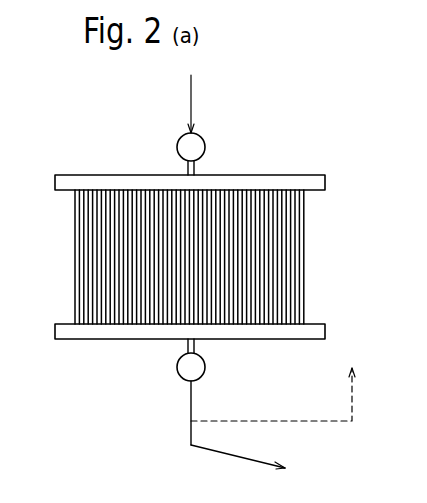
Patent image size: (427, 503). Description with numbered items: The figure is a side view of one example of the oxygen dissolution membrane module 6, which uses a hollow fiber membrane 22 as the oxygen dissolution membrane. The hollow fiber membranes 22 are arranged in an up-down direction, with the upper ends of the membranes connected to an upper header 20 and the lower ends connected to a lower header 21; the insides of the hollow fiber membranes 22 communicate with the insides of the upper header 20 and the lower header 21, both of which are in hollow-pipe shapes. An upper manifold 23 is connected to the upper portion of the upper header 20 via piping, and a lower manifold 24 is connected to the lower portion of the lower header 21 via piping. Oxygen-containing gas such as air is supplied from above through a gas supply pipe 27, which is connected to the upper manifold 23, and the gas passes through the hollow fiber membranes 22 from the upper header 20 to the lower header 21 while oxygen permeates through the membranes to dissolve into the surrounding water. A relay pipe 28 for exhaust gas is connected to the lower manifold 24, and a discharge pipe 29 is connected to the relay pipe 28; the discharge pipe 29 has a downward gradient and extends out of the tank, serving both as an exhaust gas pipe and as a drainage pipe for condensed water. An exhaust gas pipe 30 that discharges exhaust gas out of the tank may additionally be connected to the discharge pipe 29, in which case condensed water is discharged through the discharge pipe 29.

The oxygen dissolution membrane module 6 is at (258, 157).
The upper header 20 is at (115, 175).
The lower header 21 is at (86, 341).
The hollow fiber membrane 22 is at (82, 240).
The upper manifold 23 is at (205, 147).
The lower manifold 24 is at (205, 368).
The gas supply pipe 27 is at (190, 110).
The relay pipe 28 is at (190, 412).
The discharge pipe 29 is at (226, 457).
The exhaust gas pipe 30 is at (355, 405).